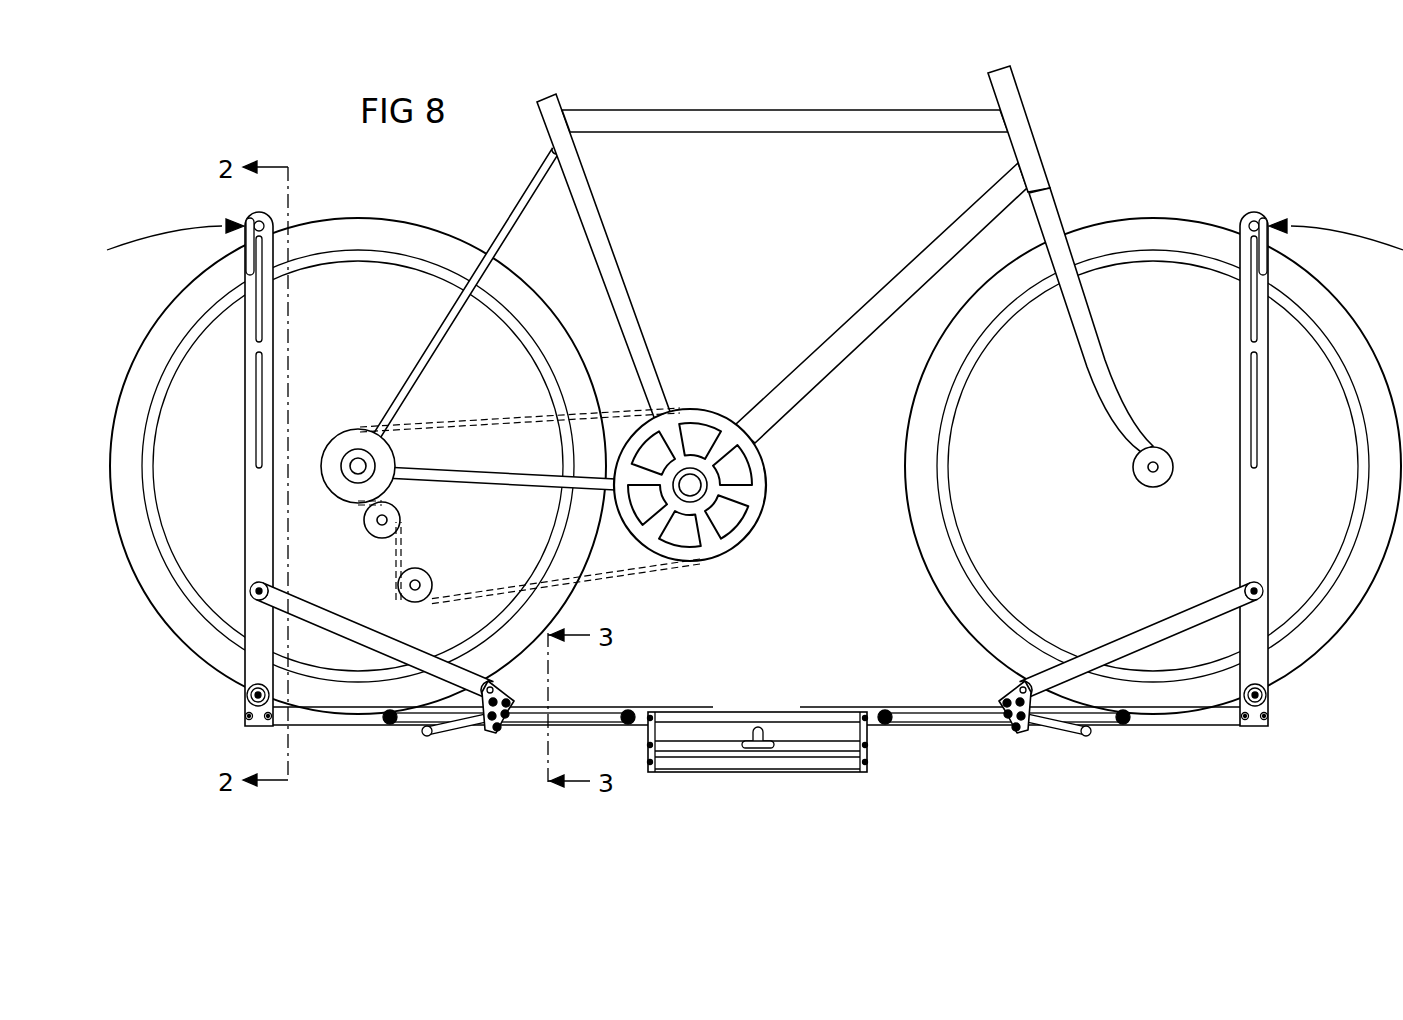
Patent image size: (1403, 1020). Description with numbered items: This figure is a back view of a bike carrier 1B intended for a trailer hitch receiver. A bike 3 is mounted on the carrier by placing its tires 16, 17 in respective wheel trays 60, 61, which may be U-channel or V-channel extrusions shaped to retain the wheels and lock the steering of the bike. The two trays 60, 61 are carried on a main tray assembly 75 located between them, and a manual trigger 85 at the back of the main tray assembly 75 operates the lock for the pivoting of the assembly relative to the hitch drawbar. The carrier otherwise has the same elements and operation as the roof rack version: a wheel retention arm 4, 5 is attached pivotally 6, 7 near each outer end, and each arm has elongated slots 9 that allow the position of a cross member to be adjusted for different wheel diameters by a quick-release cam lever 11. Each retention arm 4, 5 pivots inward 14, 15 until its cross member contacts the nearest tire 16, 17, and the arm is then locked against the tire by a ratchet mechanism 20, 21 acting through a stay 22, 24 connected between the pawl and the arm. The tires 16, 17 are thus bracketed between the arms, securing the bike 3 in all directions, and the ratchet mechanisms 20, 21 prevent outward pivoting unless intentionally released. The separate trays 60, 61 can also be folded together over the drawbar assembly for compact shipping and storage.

The bike carrier 1B is at (804, 637).
The bike 3 is at (1050, 115).
The wheel retention arm 4 is at (257, 510).
The wheel retention arm 5 is at (1262, 512).
The pivot 6 is at (247, 700).
The pivot 7 is at (1268, 700).
The elongated slots 9 is at (256, 412).
The quick-release cam lever 11 is at (252, 258).
The inward pivoting direction 14 is at (170, 236).
The inward pivoting direction 15 is at (1343, 236).
The tire 16 is at (364, 234).
The tire 17 is at (1148, 234).
The ratchet mechanism 20 is at (497, 745).
The ratchet mechanism 21 is at (1017, 745).
The stay 22 is at (330, 626).
The stay 24 is at (1168, 626).
The wheel tray 60 is at (352, 718).
The wheel tray 61 is at (1162, 716).
The main tray assembly 75 is at (883, 755).
The manual trigger 85 is at (758, 728).